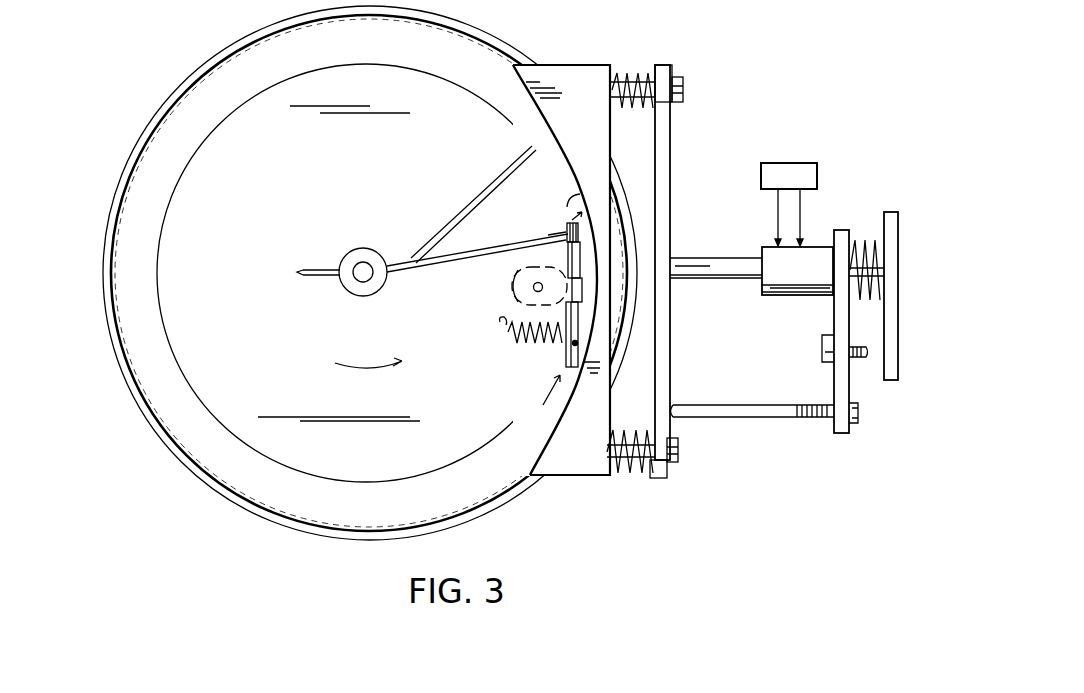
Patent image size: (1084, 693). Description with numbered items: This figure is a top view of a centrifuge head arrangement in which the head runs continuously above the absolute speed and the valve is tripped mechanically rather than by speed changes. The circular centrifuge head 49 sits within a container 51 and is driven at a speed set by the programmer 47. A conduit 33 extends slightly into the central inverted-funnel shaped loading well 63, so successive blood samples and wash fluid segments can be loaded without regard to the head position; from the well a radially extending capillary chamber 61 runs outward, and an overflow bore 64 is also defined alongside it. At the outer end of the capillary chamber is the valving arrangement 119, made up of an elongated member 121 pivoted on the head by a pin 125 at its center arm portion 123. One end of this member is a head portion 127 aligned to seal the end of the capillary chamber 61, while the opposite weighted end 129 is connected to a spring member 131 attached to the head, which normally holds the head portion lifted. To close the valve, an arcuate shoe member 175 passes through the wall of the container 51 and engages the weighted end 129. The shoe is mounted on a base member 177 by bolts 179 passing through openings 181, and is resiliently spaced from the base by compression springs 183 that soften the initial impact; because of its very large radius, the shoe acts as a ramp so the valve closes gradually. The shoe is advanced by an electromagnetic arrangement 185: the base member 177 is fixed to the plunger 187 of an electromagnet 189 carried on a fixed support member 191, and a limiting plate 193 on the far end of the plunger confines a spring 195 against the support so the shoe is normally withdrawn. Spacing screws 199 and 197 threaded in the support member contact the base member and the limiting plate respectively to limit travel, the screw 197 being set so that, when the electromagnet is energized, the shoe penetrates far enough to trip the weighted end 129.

The conduit 33 is at (325, 278).
The programmer 47 is at (800, 170).
The centrifuge head 49 is at (279, 149).
The container 51 is at (508, 485).
The capillary chamber 61 is at (463, 258).
The loading well 63 is at (362, 263).
The overflow bore 64 is at (472, 193).
The valving arrangement 119 is at (563, 232).
The elongated member 121 is at (583, 290).
The center arm portion 123 is at (533, 294).
The pin 125 is at (536, 285).
The head portion 127 is at (582, 250).
The weighted end 129 is at (576, 343).
The spring member 131 is at (517, 335).
The arcuate shoe member 175 is at (557, 65).
The base member 177 is at (667, 173).
The bolts 179 is at (683, 86).
The openings 181 is at (670, 75).
The compression springs 183 is at (627, 85).
The electromagnetic arrangement 185 is at (822, 233).
The plunger 187 is at (722, 266).
The electromagnet 189 is at (775, 290).
The fixed support member 191 is at (838, 380).
The limiting plate 193 is at (891, 212).
The spring 195 is at (864, 300).
The spacing screw 197 is at (822, 352).
The spacing screw 199 is at (757, 416).